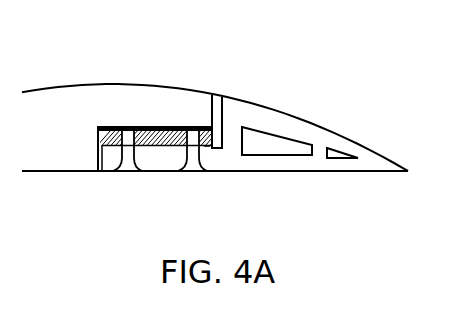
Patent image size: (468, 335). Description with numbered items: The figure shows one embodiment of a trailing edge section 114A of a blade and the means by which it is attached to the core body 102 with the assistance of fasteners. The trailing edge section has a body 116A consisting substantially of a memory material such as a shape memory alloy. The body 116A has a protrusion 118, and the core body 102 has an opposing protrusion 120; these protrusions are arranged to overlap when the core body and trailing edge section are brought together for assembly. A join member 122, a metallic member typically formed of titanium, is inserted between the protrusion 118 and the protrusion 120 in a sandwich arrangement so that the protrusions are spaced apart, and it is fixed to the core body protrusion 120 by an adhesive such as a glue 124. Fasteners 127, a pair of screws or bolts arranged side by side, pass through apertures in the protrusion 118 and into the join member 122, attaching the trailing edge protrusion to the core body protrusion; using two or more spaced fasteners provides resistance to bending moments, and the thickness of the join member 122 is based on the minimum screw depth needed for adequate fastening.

The core body 102 is at (60, 153).
The trailing edge section 114A is at (336, 113).
The body portion 116A is at (346, 160).
The protrusion 118 is at (165, 152).
The protrusion 120 is at (201, 100).
The join member 122 is at (206, 147).
The glue 124 is at (136, 124).
The fasteners 127 is at (131, 167).